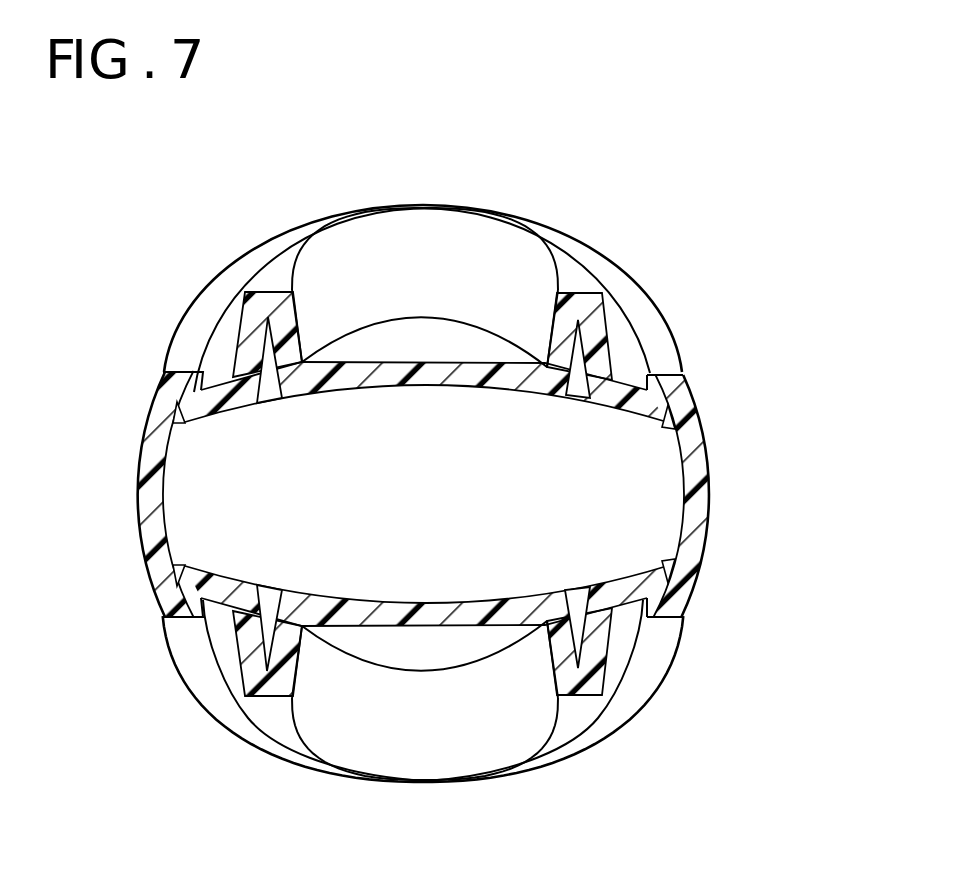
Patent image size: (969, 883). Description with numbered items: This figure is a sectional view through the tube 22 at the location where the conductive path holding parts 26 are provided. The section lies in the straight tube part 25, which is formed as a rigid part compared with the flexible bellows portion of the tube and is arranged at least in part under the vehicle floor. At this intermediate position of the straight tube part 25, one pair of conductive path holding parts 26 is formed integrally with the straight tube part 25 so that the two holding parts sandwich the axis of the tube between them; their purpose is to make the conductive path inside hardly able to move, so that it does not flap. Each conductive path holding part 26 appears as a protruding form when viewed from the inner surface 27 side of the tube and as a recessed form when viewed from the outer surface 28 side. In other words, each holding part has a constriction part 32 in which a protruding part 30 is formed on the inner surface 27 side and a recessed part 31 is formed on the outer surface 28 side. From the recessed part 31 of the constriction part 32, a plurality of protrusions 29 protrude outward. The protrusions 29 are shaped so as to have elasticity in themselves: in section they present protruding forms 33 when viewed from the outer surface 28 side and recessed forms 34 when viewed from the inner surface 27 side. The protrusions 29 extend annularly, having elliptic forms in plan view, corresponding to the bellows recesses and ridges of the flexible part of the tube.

The spherical module 22 is at (128, 220).
The straight tube part 25 is at (708, 490).
The conductive path holding part 26 is at (431, 236).
The inner surface 27 is at (150, 478).
The outer surface 28 is at (142, 534).
The protrusions 29 is at (630, 293).
The protruding part 30 is at (392, 390).
The recessed part 31 is at (437, 350).
The constriction part 32 is at (426, 485).
The protruding form 33 is at (268, 277).
The recessed form 34 is at (177, 413).